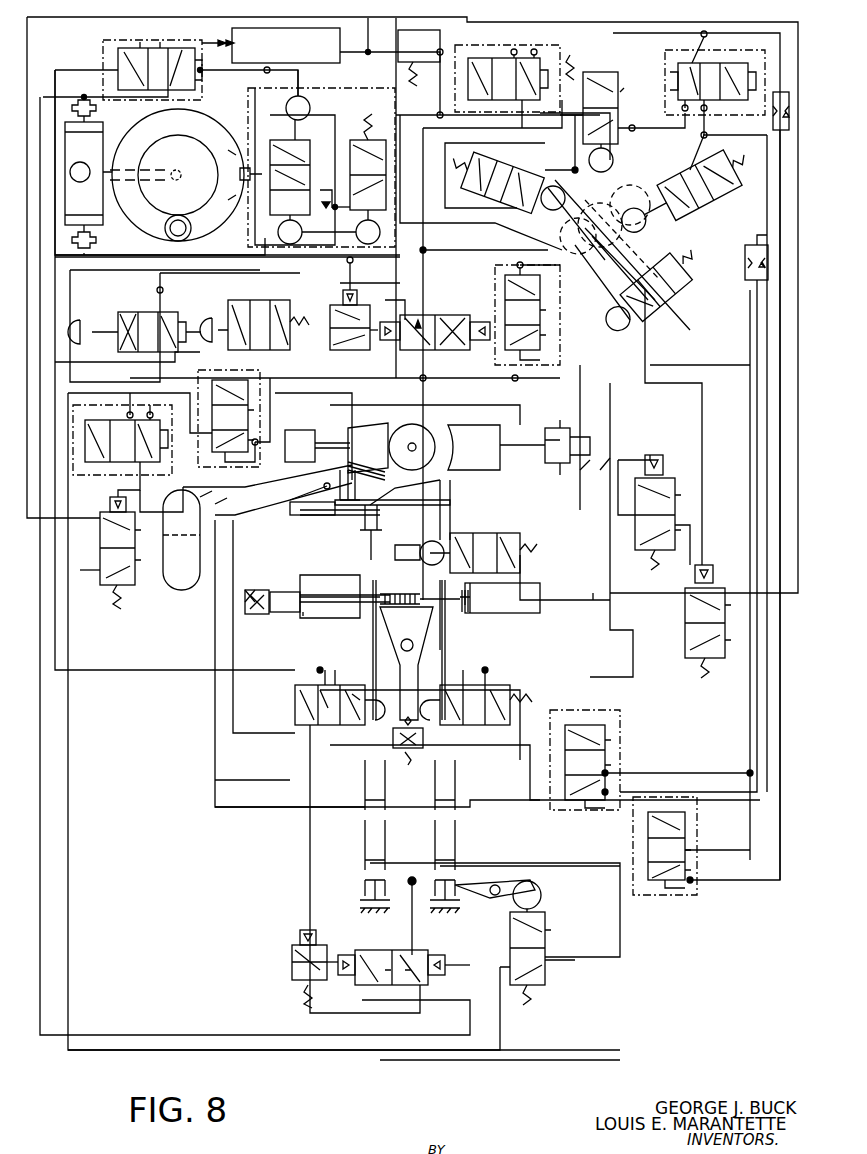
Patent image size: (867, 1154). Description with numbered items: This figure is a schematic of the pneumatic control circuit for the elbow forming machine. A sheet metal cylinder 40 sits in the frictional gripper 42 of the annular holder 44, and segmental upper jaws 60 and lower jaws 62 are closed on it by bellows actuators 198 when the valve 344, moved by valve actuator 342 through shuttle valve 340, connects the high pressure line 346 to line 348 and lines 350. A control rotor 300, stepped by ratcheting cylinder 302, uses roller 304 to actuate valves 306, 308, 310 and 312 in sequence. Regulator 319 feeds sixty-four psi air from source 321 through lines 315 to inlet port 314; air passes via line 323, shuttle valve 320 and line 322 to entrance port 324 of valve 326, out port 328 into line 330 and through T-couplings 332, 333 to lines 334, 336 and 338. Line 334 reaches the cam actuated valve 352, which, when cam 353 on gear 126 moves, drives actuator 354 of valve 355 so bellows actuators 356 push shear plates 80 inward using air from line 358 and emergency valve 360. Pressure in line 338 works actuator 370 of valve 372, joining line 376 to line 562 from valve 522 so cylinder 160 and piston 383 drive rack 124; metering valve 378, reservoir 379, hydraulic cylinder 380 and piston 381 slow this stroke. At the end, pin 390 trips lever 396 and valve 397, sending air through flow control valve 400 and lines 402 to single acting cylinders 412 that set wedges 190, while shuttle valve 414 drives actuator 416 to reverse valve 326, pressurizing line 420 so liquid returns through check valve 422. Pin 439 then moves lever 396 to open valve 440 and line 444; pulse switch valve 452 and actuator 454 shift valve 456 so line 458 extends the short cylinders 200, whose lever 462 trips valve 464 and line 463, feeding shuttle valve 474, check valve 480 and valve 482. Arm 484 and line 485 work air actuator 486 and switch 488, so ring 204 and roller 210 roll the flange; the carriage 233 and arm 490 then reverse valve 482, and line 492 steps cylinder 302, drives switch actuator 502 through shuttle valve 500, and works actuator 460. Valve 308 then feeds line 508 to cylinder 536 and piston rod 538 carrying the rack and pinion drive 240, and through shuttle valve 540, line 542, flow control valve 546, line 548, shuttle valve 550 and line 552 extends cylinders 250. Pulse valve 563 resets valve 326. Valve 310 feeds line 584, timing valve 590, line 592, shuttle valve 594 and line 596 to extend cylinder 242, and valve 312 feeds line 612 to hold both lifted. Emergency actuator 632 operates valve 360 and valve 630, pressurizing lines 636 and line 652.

The sheet metal cylinder 40 is at (388, 492).
The frictional gripper 42 is at (383, 494).
The annular holder 44 is at (442, 503).
The upper jaws 60 is at (377, 460).
The lower jaws 62 is at (385, 478).
The shear plates 80 is at (485, 460).
The rack 124 is at (327, 586).
The gear 126 is at (420, 590).
The cylinder 160 is at (525, 618).
The wedges 190 is at (335, 480).
The bellows actuators 198 is at (302, 430).
The short cylinders 200 is at (368, 888).
The ring 204 is at (170, 134).
The roller 210 is at (178, 216).
The lost motion carriage 233 is at (224, 148).
The rack and pinion drive 240 is at (360, 522).
The cylinder 242 is at (450, 770).
The cylinders 250 is at (450, 830).
The control rotor 300 is at (592, 232).
The ratcheting cylinder 302 is at (625, 340).
The roller 304 is at (581, 210).
The valve 306 is at (488, 200).
The valve 308 is at (632, 76).
The valve 310 is at (685, 189).
The valve 312 is at (690, 302).
The inlet port 314 is at (494, 179).
The lines 315 is at (333, 120).
The regulator 319 is at (399, 30).
The shuttle valve 320 is at (503, 56).
The source 321 is at (257, 28).
The line 322 is at (430, 138).
The line 323 is at (574, 58).
The entrance port 324 is at (420, 312).
The valve 326 is at (412, 312).
The port 328 is at (430, 350).
The line 330 is at (430, 370).
The T-coupling 332 is at (430, 383).
The T-coupling 333 is at (515, 385).
The line 334 is at (515, 390).
The line 336 is at (305, 378).
The line 338 is at (583, 368).
The shuttle valve 340 is at (290, 712).
The valve actuator 342 is at (108, 508).
The valve 344 is at (100, 598).
The line 346 is at (300, 18).
The line 348 is at (145, 515).
The lines 350 is at (190, 522).
The cam actuated valve 352 is at (525, 545).
The cam 353 is at (395, 552).
The actuator 354 is at (656, 455).
The valve 355 is at (670, 492).
The bellows actuators 356 is at (547, 463).
The line 358 is at (155, 360).
The emergency valve 360 is at (140, 312).
The actuator 370 is at (590, 470).
The valve 372 is at (570, 445).
The line 376 is at (565, 588).
The metering valve 378 is at (253, 585).
The reservoir 379 is at (181, 540).
The hydraulic cylinder 380 is at (290, 620).
The piston 381 is at (306, 618).
The piston 383 is at (468, 615).
The pin 390 is at (450, 625).
The lever 396 is at (420, 636).
The valve 397 is at (500, 728).
The flow control valve 400 is at (412, 760).
The lines 402 is at (332, 410).
The single acting cylinders 412 is at (315, 495).
The shuttle valve 414 is at (527, 313).
The actuator 416 is at (480, 318).
The line 420 is at (398, 350).
The check valve 422 is at (262, 620).
The pin 439 is at (330, 618).
The valve 440 is at (220, 457).
The line 444 is at (300, 780).
The pulse switch valve 452 is at (320, 945).
The actuator 454 is at (343, 988).
The valve 456 is at (390, 950).
The line 458 is at (412, 920).
The actuator 460 is at (440, 962).
The lever 462 is at (535, 884).
The line 463 is at (428, 1062).
The valve 464 is at (545, 930).
The shuttle valve 474 is at (122, 451).
The check valve 480 is at (306, 195).
The valve 482 is at (290, 170).
The arm 484 is at (280, 250).
The line 485 is at (205, 240).
The air actuator 486 is at (95, 240).
The switch 488 is at (88, 174).
The arm 490 is at (290, 80).
The line 492 is at (126, 1035).
The shuttle valve 500 is at (153, 70).
The switch actuator 502 is at (92, 110).
The line 508 is at (478, 527).
The valve 522 is at (344, 179).
The cylinder 536 is at (300, 512).
The piston rod 538 is at (330, 505).
The shuttle valve 540 is at (713, 84).
The line 542 is at (616, 38).
The flow control valve 546 is at (790, 90).
The line 548 is at (782, 178).
The shuttle valve 550 is at (625, 832).
The line 552 is at (490, 866).
The line 562 is at (400, 258).
The pulse valve 563 is at (350, 350).
The line 584 is at (752, 210).
The timing valve 590 is at (745, 258).
The line 592 is at (760, 340).
The shuttle valve 594 is at (552, 752).
The line 596 is at (240, 820).
The line 612 is at (700, 360).
The valve 630 is at (254, 325).
The actuator 632 is at (85, 305).
The lines 636 is at (345, 283).
The line 652 is at (63, 252).